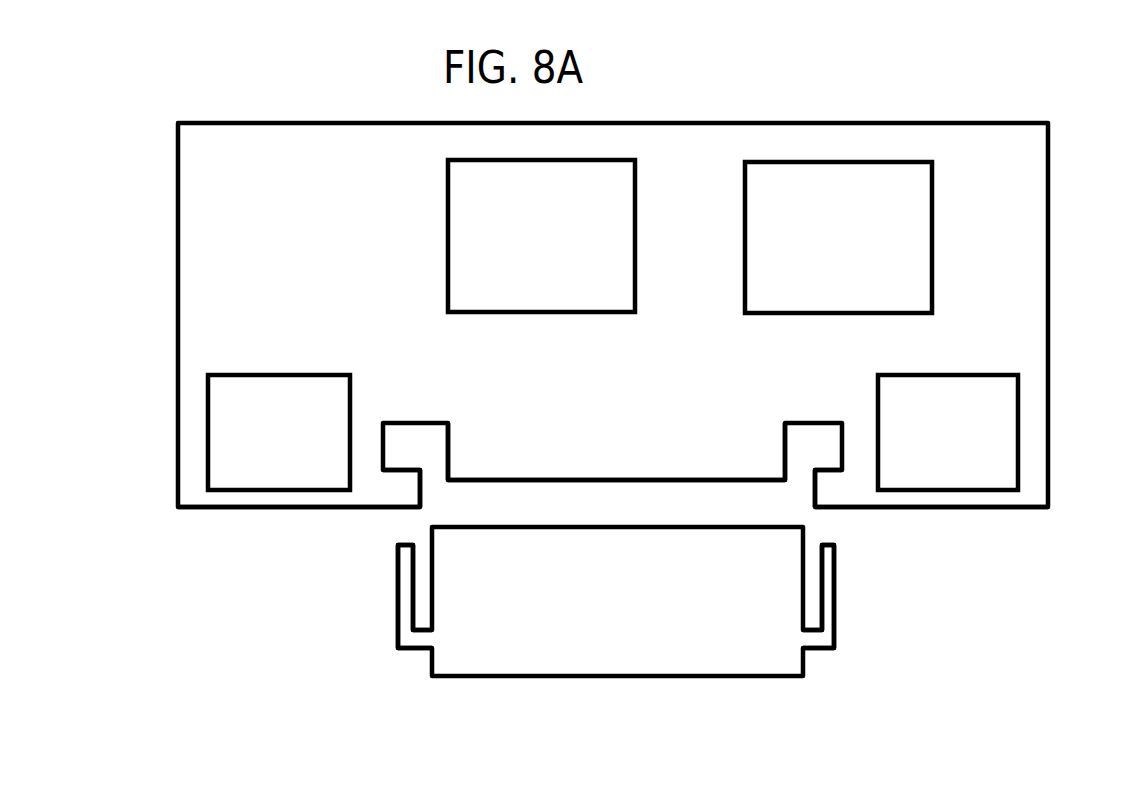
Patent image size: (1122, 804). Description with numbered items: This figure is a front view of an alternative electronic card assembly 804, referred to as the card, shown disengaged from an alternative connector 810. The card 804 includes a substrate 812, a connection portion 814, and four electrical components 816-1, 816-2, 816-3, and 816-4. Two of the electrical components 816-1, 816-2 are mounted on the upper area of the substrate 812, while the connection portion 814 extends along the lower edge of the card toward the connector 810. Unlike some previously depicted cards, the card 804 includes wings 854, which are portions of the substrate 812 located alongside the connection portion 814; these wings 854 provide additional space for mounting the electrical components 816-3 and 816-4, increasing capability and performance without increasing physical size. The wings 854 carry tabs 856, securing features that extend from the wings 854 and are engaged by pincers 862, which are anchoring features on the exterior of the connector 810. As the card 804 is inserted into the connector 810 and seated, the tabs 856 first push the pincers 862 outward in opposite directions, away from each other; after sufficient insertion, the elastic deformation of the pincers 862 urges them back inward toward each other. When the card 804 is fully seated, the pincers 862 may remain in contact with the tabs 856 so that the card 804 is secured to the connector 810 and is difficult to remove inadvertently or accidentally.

The alternative electronic card assembly 804 is at (690, 114).
The substrate 812 is at (890, 123).
The connection portion 814 is at (608, 452).
The electrical component 816-1 is at (838, 237).
The electrical component 816-2 is at (541, 236).
The electrical component 816-3 is at (948, 432).
The electrical component 816-4 is at (279, 432).
The wings 854 is at (223, 507).
The tabs 856 is at (398, 490).
The pincers 862 is at (398, 603).
The alternative connector 810 is at (625, 687).